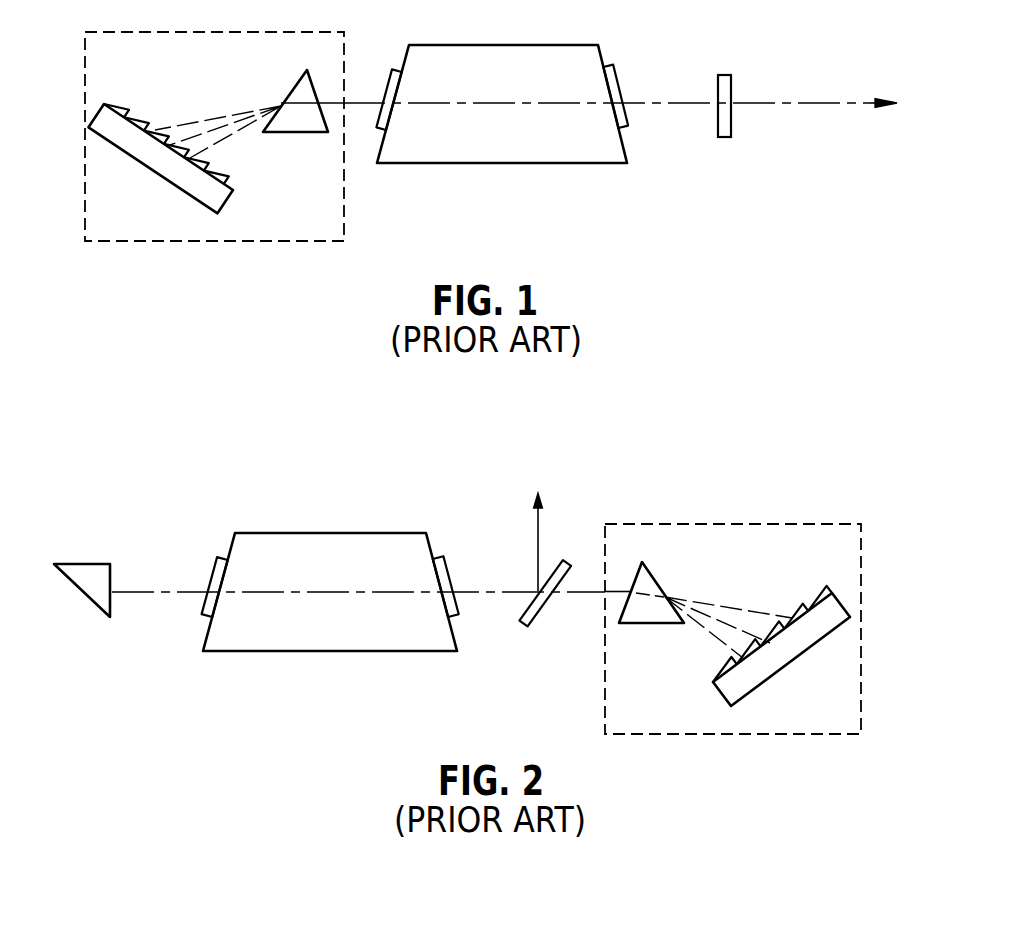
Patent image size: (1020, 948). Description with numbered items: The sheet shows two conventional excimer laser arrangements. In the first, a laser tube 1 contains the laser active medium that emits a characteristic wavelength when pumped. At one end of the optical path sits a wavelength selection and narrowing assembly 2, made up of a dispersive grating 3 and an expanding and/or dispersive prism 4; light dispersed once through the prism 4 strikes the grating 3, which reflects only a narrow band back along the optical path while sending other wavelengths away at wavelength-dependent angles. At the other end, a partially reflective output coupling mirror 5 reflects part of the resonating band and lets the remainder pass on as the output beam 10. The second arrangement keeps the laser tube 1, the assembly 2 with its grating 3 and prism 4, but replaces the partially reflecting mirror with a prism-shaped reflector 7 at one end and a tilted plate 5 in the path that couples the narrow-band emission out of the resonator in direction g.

In FIG. 1, the laser tube 1 is at (489, 148).
In FIG. 2, the laser tube 1 is at (316, 638).
In FIG. 1, the wavelength selection and narrowing assembly 2 is at (173, 65).
In FIG. 2, the wavelength selection and narrowing assembly 2 is at (759, 556).
In FIG. 1, the dispersive grating 3 is at (178, 190).
In FIG. 2, the dispersive grating 3 is at (750, 681).
In FIG. 1, the expanding and/or dispersive prism 4 is at (284, 128).
In FIG. 2, the expanding and/or dispersive prism 4 is at (631, 619).
In FIG. 1, the output coupling mirror 5 is at (725, 73).
In FIG. 2, the output coupling mirror 5 is at (527, 628).
In FIG. 2, the end mirror prism 7 is at (92, 563).
In FIG. 1, the output beam 10 is at (899, 103).
In FIG. 2, the output beam direction g is at (537, 527).